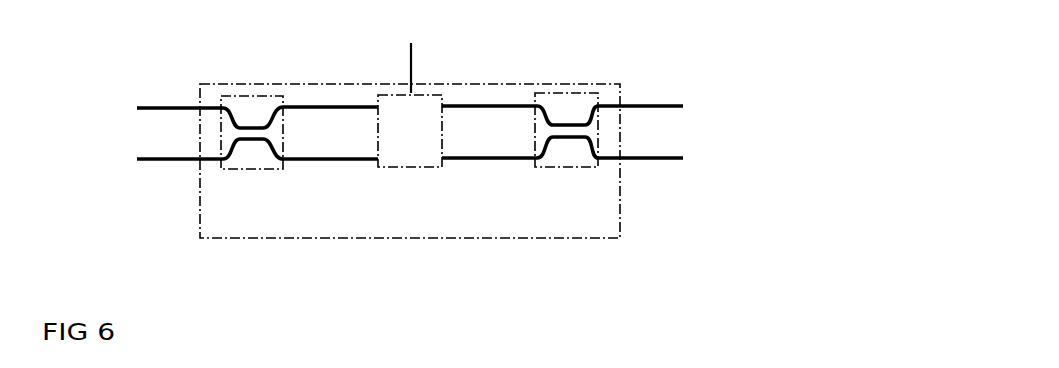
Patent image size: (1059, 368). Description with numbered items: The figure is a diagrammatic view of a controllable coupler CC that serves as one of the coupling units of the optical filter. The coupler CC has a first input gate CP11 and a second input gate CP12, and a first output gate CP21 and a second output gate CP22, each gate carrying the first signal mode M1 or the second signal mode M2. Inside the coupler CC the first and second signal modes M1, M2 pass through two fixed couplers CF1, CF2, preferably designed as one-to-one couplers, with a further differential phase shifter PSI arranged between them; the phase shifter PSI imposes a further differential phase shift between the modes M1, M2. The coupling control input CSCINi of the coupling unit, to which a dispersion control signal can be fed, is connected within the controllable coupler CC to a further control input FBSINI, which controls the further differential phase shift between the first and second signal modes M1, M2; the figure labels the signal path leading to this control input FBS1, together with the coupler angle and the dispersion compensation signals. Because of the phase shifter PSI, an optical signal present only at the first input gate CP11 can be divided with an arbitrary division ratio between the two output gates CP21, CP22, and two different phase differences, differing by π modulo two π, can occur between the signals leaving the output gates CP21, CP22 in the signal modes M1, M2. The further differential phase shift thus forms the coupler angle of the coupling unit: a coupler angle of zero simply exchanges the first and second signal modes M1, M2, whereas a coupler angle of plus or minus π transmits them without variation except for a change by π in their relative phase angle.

The controllable coupler CC is at (610, 238).
The first input gate CP11 is at (197, 107).
The second input gate CP12 is at (200, 160).
The first output gate CP21 is at (627, 100).
The second output gate CP22 is at (620, 170).
The first fixed coupler CF1 is at (262, 170).
The second fixed coupler CF2 is at (577, 168).
The further differential phase shifter PSI is at (397, 170).
The i-th coupling control input CSCINi is at (413, 90).
The further control input FBSINI is at (420, 93).
The feedback signal / control lines FBS1 is at (407, 67).
The first signal mode M1 is at (150, 127).
The second signal mode M2 is at (148, 186).